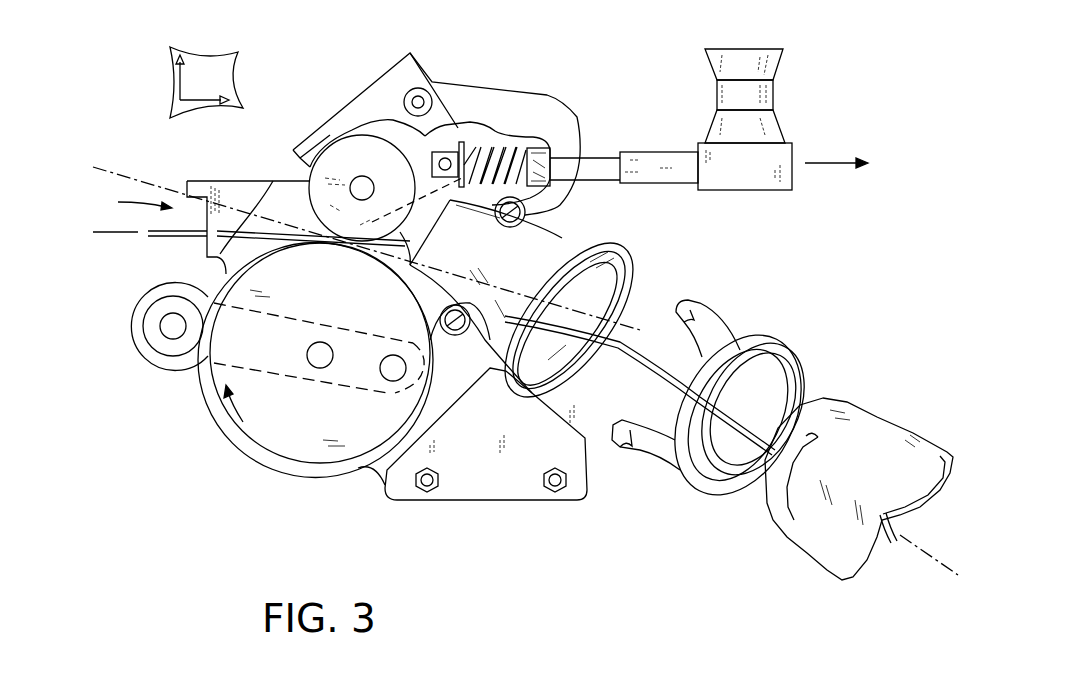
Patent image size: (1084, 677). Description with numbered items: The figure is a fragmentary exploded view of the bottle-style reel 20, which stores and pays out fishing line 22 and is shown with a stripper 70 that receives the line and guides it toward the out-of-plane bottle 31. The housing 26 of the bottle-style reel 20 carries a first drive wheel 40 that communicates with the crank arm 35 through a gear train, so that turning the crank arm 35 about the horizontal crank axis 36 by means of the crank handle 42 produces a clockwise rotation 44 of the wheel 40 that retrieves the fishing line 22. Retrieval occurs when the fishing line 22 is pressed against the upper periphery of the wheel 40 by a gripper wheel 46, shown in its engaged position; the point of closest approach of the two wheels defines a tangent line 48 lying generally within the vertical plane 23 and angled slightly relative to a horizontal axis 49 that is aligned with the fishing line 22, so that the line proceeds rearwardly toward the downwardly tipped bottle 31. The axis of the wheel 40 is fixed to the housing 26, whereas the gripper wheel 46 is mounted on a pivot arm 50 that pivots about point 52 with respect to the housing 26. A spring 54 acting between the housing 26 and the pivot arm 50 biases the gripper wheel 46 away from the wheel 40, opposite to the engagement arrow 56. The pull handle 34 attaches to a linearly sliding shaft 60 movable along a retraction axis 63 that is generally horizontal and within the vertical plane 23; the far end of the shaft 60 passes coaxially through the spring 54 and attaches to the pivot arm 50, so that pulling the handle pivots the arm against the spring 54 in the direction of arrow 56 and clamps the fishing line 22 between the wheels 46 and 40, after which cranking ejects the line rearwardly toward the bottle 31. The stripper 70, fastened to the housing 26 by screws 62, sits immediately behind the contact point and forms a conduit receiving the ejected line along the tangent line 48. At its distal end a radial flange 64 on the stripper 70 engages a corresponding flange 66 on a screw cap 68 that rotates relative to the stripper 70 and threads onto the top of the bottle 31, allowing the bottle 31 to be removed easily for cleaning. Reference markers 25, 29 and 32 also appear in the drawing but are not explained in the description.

The bottle-style reel 20 is at (122, 370).
The fishing line 22 is at (182, 240).
The vertical plane 23 is at (172, 80).
The direction of travel 25 is at (127, 204).
The housing 26 is at (232, 181).
The direction 29 is at (873, 364).
The bottle 31 is at (820, 550).
The axis 32 is at (925, 548).
The pull handle 34 is at (770, 48).
The crank arm 35 is at (187, 343).
The crank axis 36 is at (395, 378).
The first drive wheel 40 is at (263, 437).
The crank handle 42 is at (130, 326).
The clockwise rotation 44 is at (225, 420).
The gripper wheel 46 is at (292, 156).
The tangent line 48 is at (136, 177).
The horizontal axis 49 is at (110, 233).
The pivot arm 50 is at (398, 80).
The pivot point 52 is at (430, 100).
The spring 54 is at (513, 150).
The engagement arrow 56 is at (345, 80).
The linearly sliding shaft 60 is at (608, 163).
The screws 62 is at (562, 147).
The retraction axis 63 is at (833, 160).
The radial flange 64 is at (620, 262).
The flange 66 is at (680, 318).
The screw cap 68 is at (755, 330).
The stripper 70 is at (558, 236).